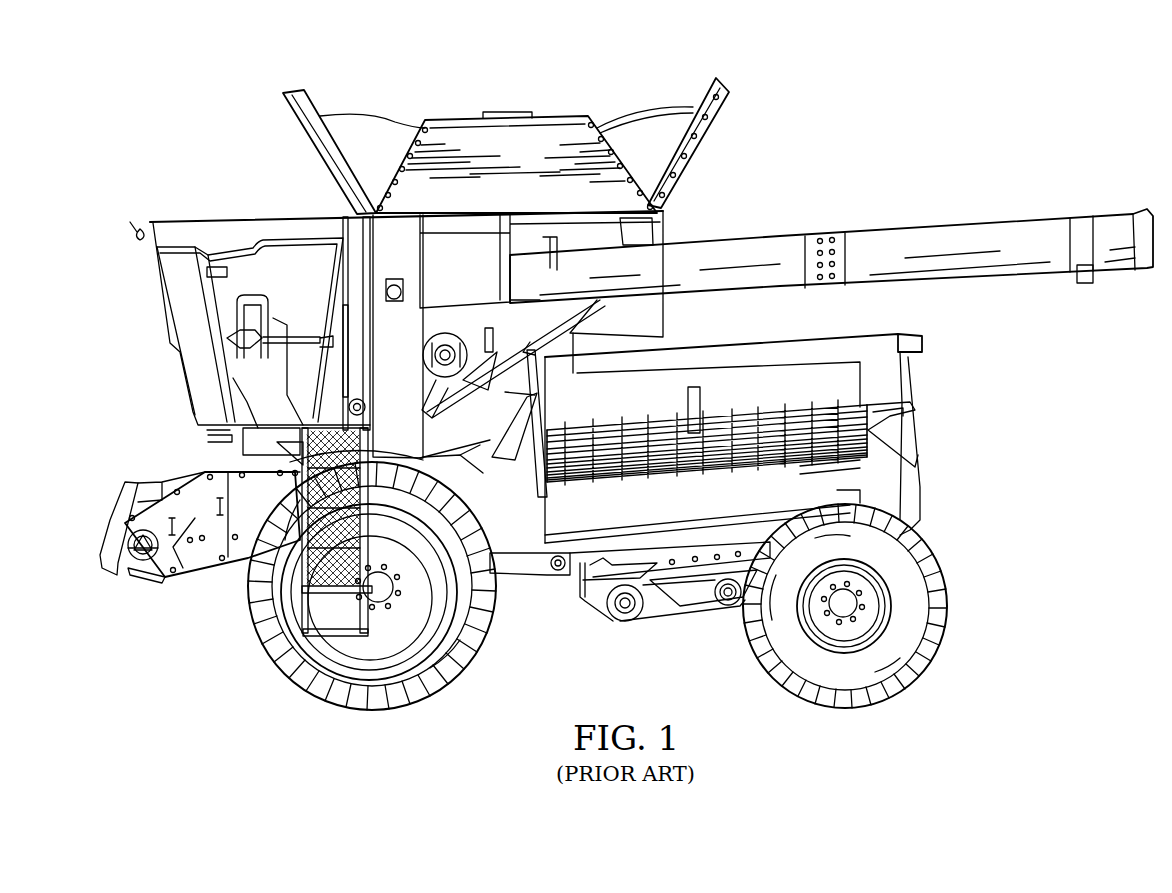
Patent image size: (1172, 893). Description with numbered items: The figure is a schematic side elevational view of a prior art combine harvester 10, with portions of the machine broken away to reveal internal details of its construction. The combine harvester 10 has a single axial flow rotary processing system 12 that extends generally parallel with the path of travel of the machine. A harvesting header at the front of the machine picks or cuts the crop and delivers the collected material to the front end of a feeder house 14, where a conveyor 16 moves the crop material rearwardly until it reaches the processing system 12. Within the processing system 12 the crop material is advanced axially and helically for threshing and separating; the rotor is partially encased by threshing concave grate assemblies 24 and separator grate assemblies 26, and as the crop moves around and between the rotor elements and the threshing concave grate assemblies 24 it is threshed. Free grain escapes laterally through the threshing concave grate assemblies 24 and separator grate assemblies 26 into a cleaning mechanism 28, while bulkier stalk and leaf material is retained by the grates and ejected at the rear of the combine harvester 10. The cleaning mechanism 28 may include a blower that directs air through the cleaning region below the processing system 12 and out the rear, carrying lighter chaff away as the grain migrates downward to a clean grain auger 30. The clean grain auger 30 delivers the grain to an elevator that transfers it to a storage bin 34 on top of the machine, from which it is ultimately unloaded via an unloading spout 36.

The combine harvester 10 is at (836, 104).
The axial flow rotary processing system 12 is at (752, 332).
The feeder house 14 is at (106, 500).
The conveyor 16 is at (430, 383).
The threshing concave grate assembly 24 is at (637, 487).
The separator grate assembly 26 is at (800, 468).
The cleaning mechanism 28 is at (641, 523).
The clean grain auger 30 is at (623, 623).
The storage bin 34 is at (723, 107).
The unloading spout 36 is at (953, 228).